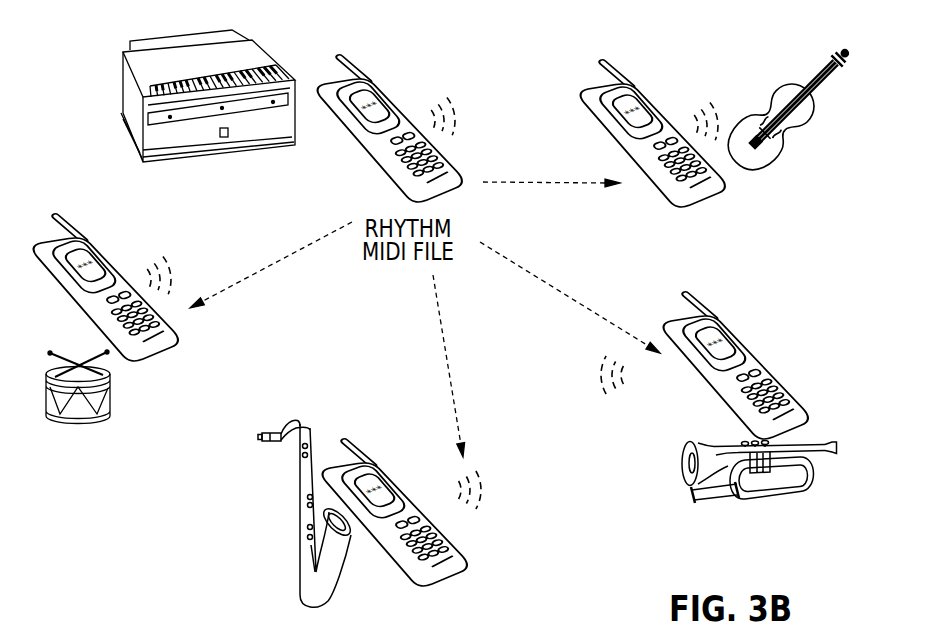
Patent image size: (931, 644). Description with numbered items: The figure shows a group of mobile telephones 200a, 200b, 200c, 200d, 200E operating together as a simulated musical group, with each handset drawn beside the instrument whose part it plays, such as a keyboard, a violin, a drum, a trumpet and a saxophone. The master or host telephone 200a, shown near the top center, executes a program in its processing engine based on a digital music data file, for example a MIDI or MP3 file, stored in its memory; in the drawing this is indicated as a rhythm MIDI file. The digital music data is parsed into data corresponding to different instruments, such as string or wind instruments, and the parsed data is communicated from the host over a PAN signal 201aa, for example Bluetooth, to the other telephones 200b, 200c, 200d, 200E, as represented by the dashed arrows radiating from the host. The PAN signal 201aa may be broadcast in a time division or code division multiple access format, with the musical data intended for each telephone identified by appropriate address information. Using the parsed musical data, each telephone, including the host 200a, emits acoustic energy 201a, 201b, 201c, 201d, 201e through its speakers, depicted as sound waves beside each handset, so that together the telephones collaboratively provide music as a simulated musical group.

The master telephone 200a is at (457, 157).
The mobile telephone 200b is at (705, 200).
The mobile telephone 200c is at (730, 404).
The mobile telephone 200d is at (464, 538).
The mobile telephone 200E is at (148, 358).
The acoustic energy 201a is at (441, 112).
The acoustic energy 201b is at (711, 118).
The acoustic energy 201c is at (600, 375).
The acoustic energy 201d is at (484, 487).
The acoustic energy 201e is at (160, 272).
The PAN signal 201aa is at (435, 287).